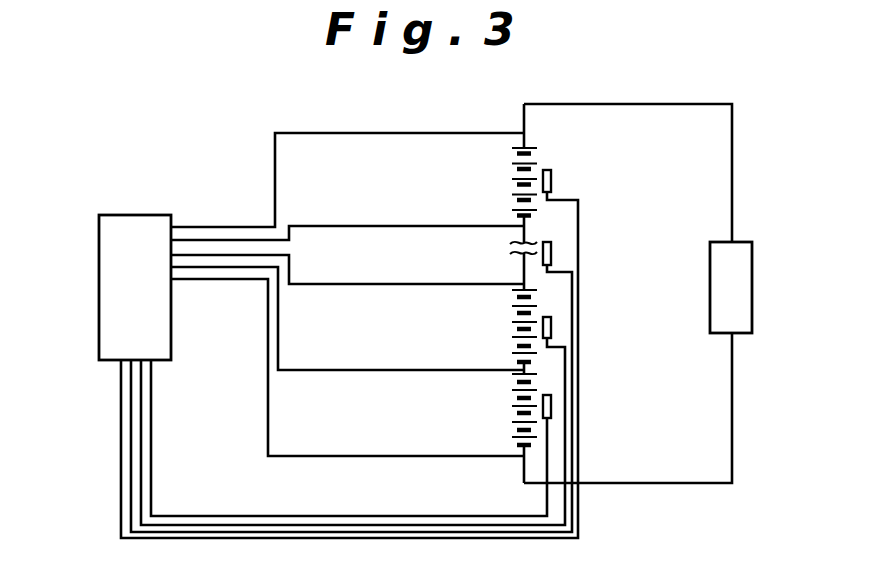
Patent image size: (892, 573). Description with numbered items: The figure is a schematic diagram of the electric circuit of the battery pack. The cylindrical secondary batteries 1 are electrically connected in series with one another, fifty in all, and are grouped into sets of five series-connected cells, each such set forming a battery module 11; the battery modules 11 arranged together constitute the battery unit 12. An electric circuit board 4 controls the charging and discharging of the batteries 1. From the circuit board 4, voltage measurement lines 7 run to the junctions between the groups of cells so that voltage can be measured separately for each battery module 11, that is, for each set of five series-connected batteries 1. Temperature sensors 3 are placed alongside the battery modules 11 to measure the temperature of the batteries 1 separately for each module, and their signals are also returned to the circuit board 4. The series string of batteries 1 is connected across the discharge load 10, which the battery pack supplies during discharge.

The cylindrical secondary battery 1 is at (481, 326).
The temperature sensor 3 is at (553, 177).
The electric circuit board 4 is at (122, 280).
The voltage measurement line 7 is at (275, 160).
The discharge load 10 is at (737, 253).
The battery module 11 is at (510, 148).
The battery unit 12 is at (481, 297).